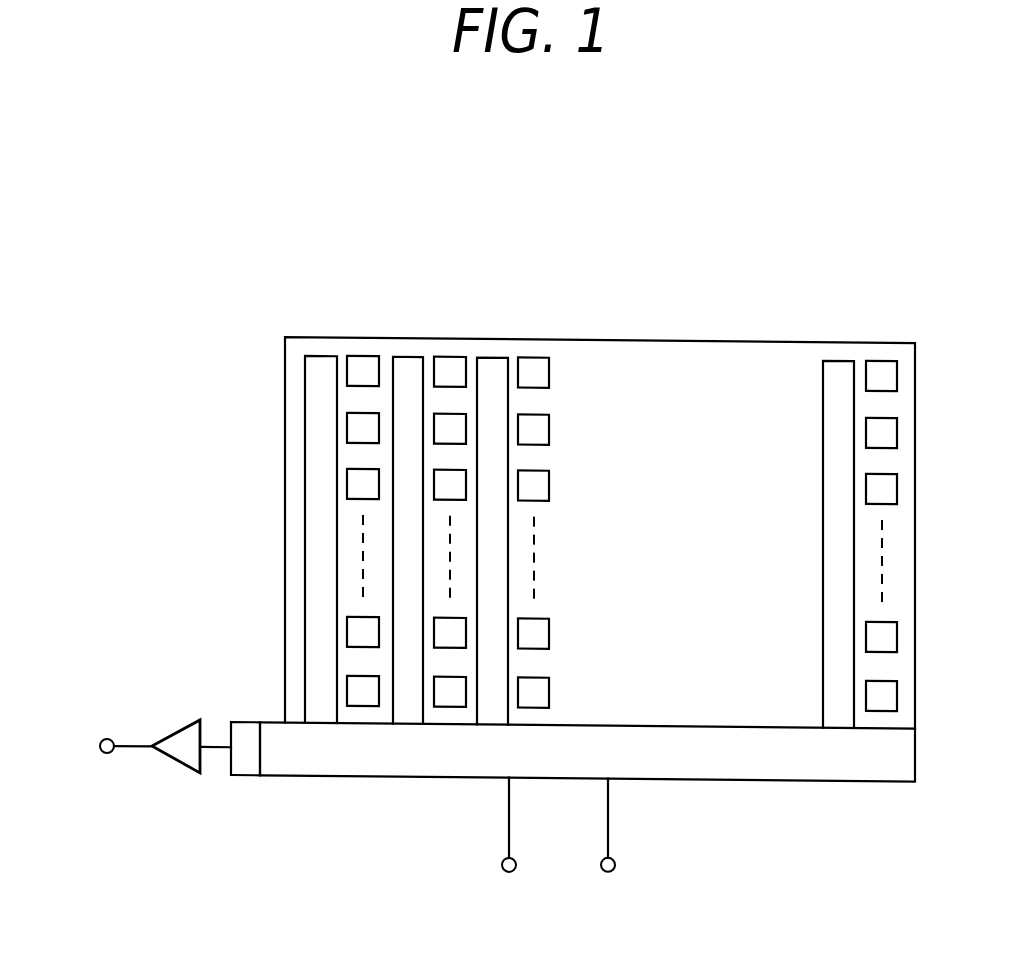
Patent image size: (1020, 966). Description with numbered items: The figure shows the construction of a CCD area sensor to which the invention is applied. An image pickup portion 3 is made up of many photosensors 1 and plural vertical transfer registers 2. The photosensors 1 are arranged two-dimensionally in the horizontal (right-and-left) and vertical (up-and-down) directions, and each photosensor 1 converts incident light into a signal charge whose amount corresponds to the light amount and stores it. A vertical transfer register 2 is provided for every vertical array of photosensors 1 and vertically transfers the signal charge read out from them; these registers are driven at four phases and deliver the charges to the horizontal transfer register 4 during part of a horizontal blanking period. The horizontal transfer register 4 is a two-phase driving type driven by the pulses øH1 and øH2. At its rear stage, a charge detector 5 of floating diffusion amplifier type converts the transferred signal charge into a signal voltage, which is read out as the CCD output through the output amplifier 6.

The photosensor 1 is at (533, 360).
The vertical transfer register 2 is at (410, 361).
The image pickup portion 3 is at (717, 396).
The horizontal transfer register 4 is at (833, 754).
The charge detector 5 is at (243, 753).
The output amplifier 6 is at (172, 755).